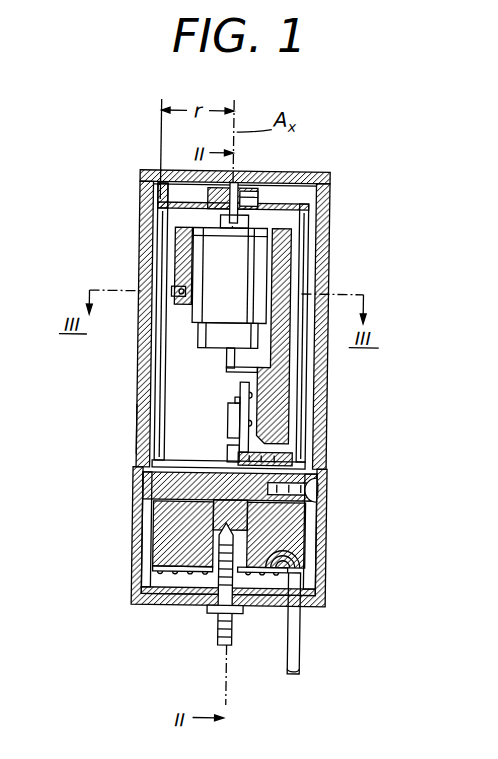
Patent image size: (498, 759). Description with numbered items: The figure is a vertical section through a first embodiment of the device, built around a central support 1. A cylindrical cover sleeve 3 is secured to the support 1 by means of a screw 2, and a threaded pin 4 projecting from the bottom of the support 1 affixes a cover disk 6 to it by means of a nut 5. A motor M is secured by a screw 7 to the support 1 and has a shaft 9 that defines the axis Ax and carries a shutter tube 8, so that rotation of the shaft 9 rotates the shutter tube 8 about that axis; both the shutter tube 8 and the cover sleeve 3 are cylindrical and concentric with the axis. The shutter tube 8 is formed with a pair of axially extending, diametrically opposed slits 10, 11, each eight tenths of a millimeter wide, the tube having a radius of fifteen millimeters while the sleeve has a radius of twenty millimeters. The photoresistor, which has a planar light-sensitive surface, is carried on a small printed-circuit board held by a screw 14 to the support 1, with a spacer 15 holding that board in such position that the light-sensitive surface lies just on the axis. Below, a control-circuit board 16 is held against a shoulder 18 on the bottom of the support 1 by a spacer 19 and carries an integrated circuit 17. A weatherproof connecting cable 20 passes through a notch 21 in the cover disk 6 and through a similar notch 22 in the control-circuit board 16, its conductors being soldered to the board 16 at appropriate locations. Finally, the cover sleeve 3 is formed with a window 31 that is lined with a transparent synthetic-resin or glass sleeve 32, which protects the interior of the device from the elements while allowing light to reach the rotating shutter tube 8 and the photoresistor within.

The central support 1 is at (150, 487).
The screw 2 is at (324, 489).
The cover sleeve 3 is at (327, 388).
The threaded pin 4 is at (223, 643).
The nut 5 is at (238, 616).
The cover disk 6 is at (148, 606).
The screw 7 is at (176, 301).
The shutter tube 8 is at (300, 229).
The shaft 9 is at (252, 196).
The slit 10 is at (300, 355).
The slit 11 is at (163, 388).
The screw 14 is at (228, 455).
The spacer 15 is at (278, 451).
The control-circuit board 16 is at (168, 570).
The integrated circuit 17 is at (285, 544).
The shoulder 18 is at (196, 549).
The spacer 19 is at (190, 596).
The weatherproof connecting cable 20 is at (305, 650).
The notch 21 is at (328, 603).
The notch 22 is at (305, 574).
The window 31 is at (141, 358).
The sleeve 32 is at (143, 423).
The motor M is at (253, 269).